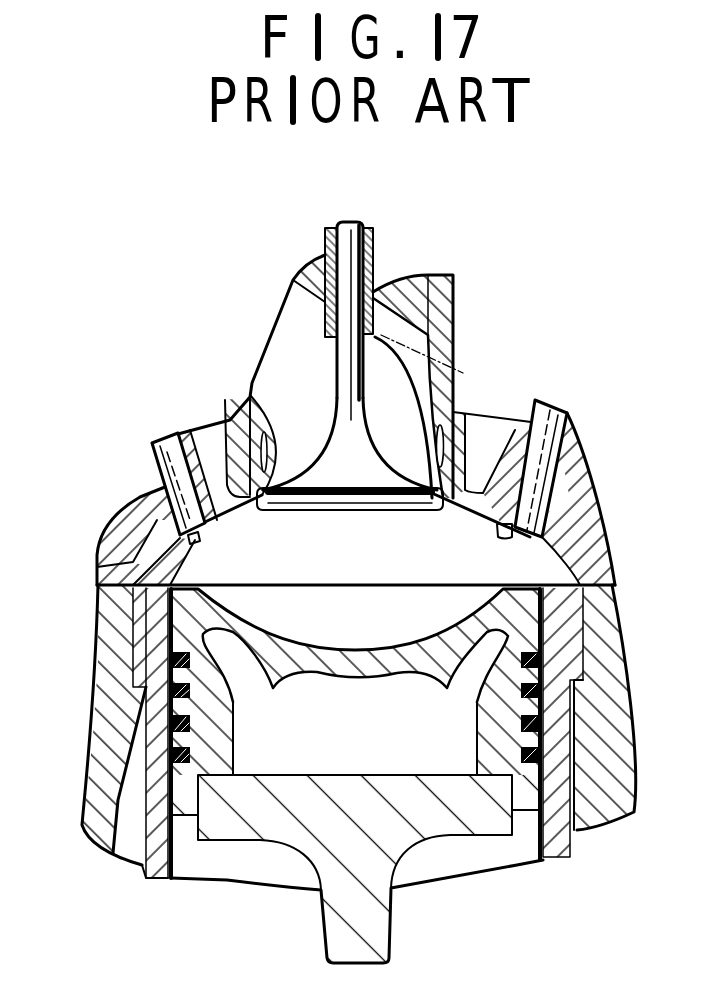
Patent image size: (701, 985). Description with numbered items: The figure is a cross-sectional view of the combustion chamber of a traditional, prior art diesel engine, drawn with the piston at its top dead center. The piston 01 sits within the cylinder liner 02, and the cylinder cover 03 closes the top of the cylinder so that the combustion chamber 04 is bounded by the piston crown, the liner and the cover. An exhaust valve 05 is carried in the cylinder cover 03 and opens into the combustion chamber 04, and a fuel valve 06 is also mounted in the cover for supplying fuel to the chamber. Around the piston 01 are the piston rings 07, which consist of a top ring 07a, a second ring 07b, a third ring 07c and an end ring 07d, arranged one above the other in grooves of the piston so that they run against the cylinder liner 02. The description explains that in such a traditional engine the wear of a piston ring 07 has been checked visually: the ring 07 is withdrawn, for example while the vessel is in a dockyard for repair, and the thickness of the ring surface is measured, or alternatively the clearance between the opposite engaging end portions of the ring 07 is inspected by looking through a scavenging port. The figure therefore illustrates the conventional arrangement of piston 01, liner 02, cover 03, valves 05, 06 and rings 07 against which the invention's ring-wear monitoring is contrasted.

The piston 01 is at (545, 616).
The cylinder liner 02 is at (560, 847).
The cylinder cover 03 is at (590, 560).
The combustion chamber 04 is at (370, 567).
The exhaust valve 05 is at (367, 422).
The fuel valve 06 is at (177, 435).
The piston rings 07 is at (543, 718).
The top ring 07a is at (173, 658).
The second ring 07b is at (168, 688).
The third ring 07c is at (172, 725).
The end ring 07d is at (172, 755).